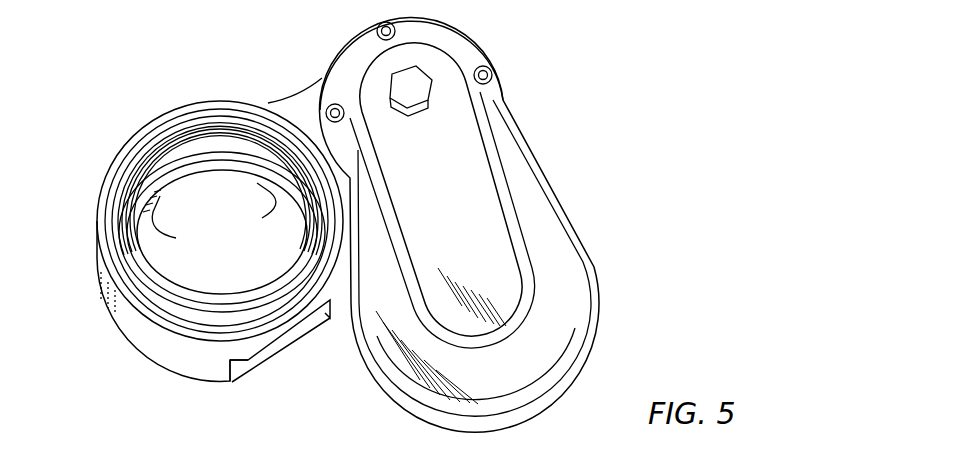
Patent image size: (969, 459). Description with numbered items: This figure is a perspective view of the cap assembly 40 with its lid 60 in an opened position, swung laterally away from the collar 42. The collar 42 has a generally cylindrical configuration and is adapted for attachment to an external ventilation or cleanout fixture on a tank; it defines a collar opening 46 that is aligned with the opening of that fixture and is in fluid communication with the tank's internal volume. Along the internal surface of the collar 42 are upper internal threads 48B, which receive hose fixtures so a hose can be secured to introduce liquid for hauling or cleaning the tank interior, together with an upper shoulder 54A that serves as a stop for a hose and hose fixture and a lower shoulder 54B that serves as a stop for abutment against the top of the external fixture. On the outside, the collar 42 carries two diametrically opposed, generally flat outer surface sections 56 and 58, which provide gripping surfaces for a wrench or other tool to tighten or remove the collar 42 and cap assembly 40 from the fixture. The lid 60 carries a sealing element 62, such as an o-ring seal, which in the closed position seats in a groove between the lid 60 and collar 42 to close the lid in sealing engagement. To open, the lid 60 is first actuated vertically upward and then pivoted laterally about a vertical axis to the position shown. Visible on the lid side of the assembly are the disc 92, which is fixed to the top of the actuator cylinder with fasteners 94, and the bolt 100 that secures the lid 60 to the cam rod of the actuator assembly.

The cap assembly 40 is at (468, 216).
The collar 42 is at (167, 373).
The collar opening 46 is at (218, 199).
The upper internal threads 48B is at (247, 110).
The upper shoulder 54A is at (183, 225).
The lower shoulder 54B is at (248, 210).
The flat outer surface section 56 is at (248, 363).
The flat outer surface section 58 is at (333, 209).
The lid 60 is at (558, 237).
The sealing element 62 is at (157, 133).
The disc 92 is at (342, 50).
The fasteners 94 is at (383, 26).
The bolt 100 is at (432, 88).